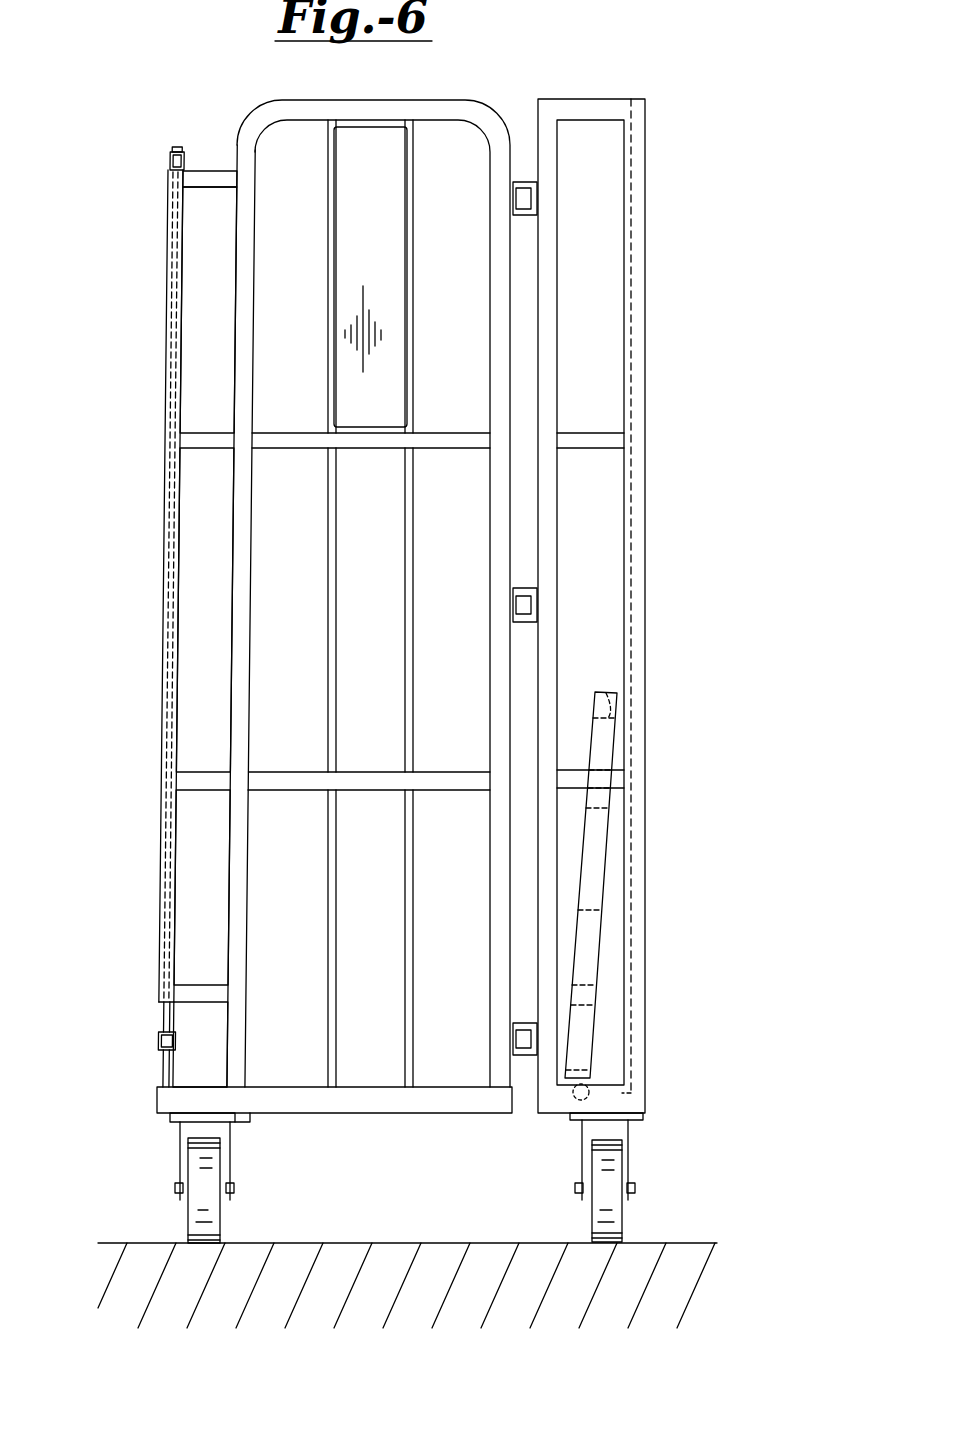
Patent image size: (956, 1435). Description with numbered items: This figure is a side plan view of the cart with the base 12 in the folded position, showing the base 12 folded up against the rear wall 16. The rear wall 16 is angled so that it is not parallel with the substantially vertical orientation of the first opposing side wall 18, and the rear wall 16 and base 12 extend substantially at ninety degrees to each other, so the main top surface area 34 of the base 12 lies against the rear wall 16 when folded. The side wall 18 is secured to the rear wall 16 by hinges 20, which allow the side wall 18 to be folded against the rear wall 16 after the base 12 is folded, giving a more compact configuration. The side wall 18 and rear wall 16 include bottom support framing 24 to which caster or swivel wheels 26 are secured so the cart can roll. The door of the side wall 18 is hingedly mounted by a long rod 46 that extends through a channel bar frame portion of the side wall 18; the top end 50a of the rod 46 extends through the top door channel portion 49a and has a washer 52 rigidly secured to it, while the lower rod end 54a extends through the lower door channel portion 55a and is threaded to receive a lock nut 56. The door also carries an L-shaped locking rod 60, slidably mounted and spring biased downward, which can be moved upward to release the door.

The base 12 is at (611, 684).
The rear wall 16 is at (655, 696).
The first opposing side wall 18 is at (474, 94).
The hinges 20 is at (517, 214).
The bottom support framing 24 is at (158, 1115).
The caster or swivel wheels 26 is at (188, 1217).
The main top surface area 34 is at (598, 952).
The long rod 46 is at (155, 597).
The top door channel portion 49a is at (170, 160).
The top end of rod 50a is at (175, 183).
The washer 52 is at (179, 148).
The lower rod end 54a is at (160, 1022).
The lower door channel portion 55a is at (158, 1040).
The lock nut 56 is at (158, 1046).
The L-shaped locking rod 60 is at (165, 1073).